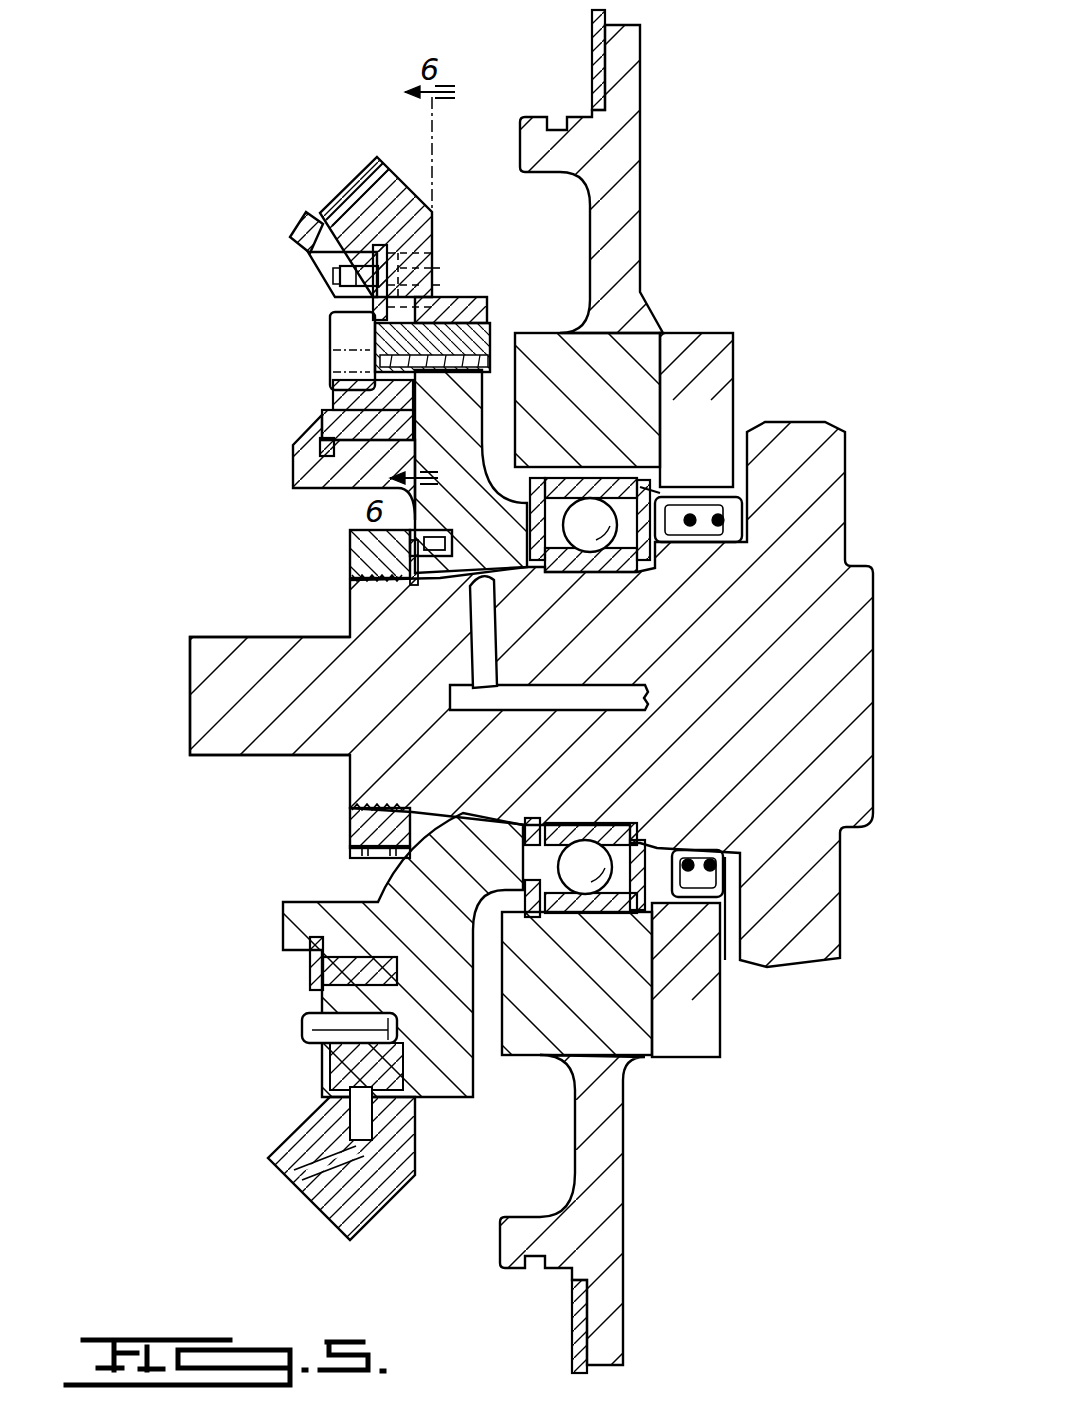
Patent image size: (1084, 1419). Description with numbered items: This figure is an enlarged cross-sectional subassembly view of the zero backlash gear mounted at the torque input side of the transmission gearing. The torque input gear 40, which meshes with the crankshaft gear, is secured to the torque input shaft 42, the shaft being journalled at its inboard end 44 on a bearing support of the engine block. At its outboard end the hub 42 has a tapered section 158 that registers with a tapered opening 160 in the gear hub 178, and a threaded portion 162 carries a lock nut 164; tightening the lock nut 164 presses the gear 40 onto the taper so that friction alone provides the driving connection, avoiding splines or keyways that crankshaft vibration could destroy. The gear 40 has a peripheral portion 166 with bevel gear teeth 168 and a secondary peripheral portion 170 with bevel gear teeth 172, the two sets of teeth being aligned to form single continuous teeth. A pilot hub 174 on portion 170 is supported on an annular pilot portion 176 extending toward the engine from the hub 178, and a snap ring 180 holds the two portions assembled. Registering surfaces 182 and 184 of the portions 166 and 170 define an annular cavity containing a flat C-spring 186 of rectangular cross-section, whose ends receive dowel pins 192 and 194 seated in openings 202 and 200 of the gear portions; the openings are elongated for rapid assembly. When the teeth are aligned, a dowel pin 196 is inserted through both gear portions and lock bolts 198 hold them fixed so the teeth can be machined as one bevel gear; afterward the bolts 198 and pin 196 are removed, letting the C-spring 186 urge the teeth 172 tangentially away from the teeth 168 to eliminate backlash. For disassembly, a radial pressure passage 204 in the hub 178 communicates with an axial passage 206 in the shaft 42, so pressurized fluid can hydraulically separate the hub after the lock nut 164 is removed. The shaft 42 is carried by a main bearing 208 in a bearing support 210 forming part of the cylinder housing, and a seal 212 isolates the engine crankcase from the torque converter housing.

The torque input gear 40 is at (418, 248).
The torque input shaft 42 is at (712, 813).
The inboard end 44 is at (205, 690).
The tapered section 158 is at (400, 858).
The tapered opening 160 is at (420, 560).
The threaded portion 162 is at (400, 578).
The lock nut 164 is at (352, 832).
The peripheral portion 166 is at (378, 212).
The bevel gear teeth 168 is at (335, 198).
The secondary peripheral portion 170 is at (345, 270).
The bevel gear teeth 172 is at (298, 236).
The pilot hub 174 is at (342, 400).
The annular pilot portion 176 is at (322, 452).
The gear hub 178 is at (470, 452).
The snap ring 180 is at (370, 432).
The registering surface 182 is at (397, 252).
The registering surface 184 is at (365, 332).
The flat C-spring 186 is at (360, 1113).
The dowel pin 192 is at (352, 280).
The dowel pin 194 is at (440, 268).
The dowel pin 196 is at (305, 1033).
The lock bolts 198 is at (485, 340).
The opening 200 is at (440, 287).
The opening 202 is at (372, 300).
The pressure passage 204 is at (475, 612).
The passage 206 is at (607, 708).
The main bearing 208 is at (590, 548).
The bearing support 210 is at (640, 385).
The seal 212 is at (700, 525).